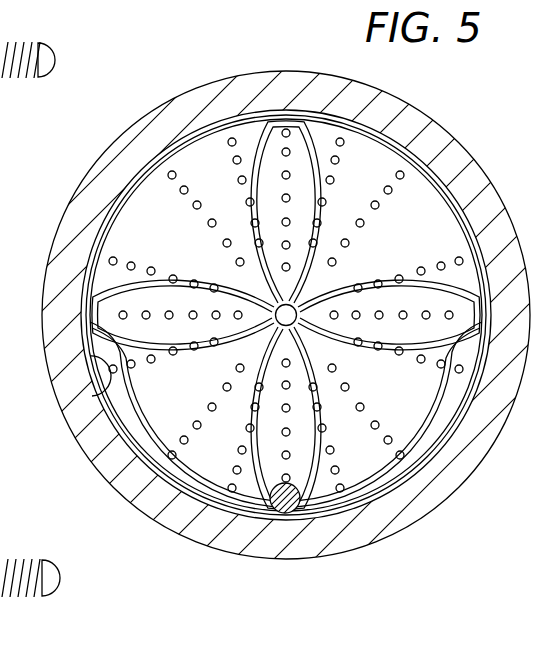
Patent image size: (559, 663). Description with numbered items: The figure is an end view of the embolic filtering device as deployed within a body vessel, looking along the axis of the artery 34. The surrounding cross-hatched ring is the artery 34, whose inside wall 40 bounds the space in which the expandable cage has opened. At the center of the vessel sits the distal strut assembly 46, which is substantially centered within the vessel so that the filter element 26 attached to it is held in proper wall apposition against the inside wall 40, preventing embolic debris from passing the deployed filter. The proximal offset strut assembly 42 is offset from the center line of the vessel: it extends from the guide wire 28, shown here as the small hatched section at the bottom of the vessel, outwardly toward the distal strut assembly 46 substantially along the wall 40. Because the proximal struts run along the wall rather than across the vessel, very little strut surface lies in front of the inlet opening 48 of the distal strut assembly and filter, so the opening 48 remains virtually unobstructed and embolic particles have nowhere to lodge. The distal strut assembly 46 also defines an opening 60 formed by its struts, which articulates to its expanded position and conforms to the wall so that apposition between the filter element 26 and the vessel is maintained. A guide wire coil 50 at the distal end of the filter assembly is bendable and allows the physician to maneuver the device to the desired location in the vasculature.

The filter element 26 is at (412, 211).
The guide wire 28 is at (285, 511).
The artery 34 is at (413, 106).
The inside wall 40 is at (92, 396).
The proximal offset strut assembly 42 is at (205, 472).
The distal strut assembly 46 is at (440, 282).
The inlet opening 48 is at (213, 206).
The guide wire coil 50 is at (0, 515).
The opening 60 is at (443, 432).